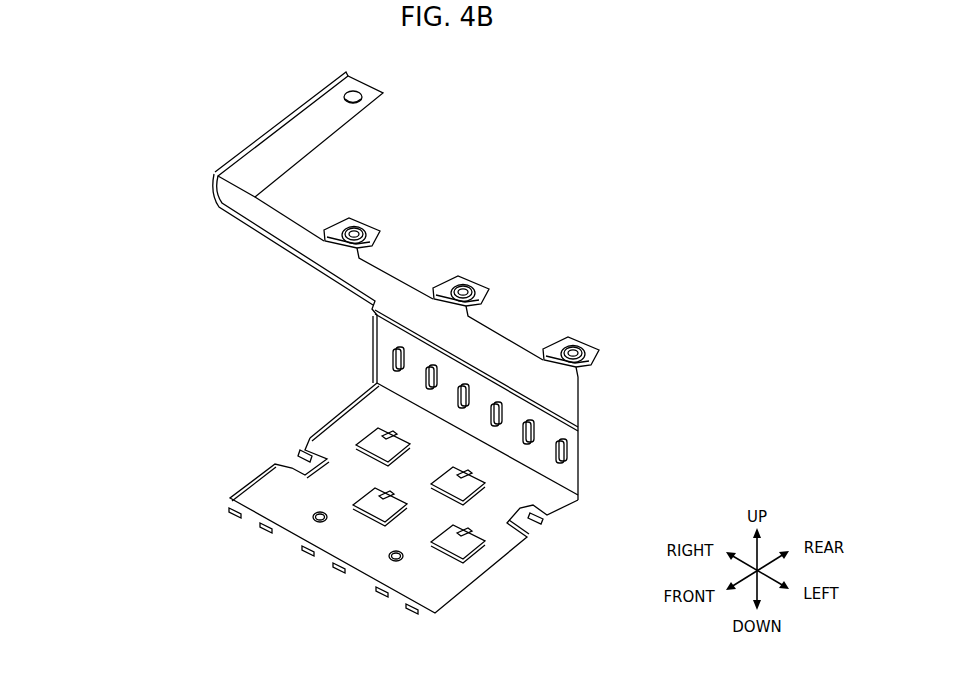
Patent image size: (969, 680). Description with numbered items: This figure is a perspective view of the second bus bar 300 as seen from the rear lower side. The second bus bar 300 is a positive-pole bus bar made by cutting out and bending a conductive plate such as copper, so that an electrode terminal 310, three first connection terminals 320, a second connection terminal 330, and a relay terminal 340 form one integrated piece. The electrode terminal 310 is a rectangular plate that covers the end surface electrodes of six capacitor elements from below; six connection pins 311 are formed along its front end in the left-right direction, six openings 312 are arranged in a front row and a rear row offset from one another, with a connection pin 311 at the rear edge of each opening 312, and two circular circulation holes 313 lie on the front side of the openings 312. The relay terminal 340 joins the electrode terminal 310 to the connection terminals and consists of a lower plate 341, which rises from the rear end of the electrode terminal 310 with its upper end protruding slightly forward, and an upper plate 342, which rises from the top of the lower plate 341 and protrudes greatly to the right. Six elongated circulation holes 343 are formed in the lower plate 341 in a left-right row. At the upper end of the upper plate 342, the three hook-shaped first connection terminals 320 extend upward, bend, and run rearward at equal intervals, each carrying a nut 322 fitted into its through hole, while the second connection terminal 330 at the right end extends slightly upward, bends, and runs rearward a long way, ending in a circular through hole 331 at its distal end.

The second bus bar 300 is at (560, 231).
The electrode terminal 310 is at (324, 424).
The connection pin 311 is at (392, 438).
The opening 312 is at (368, 428).
The circulation hole 313 is at (313, 522).
The first connection terminal 320 is at (374, 222).
The nut 322 is at (350, 224).
The second connection terminal 330 is at (290, 120).
The through hole 331 is at (360, 104).
The relay terminal 340 is at (254, 243).
The lower plate 341 is at (583, 455).
The upper plate 342 is at (316, 272).
The circulation hole 343 is at (430, 366).